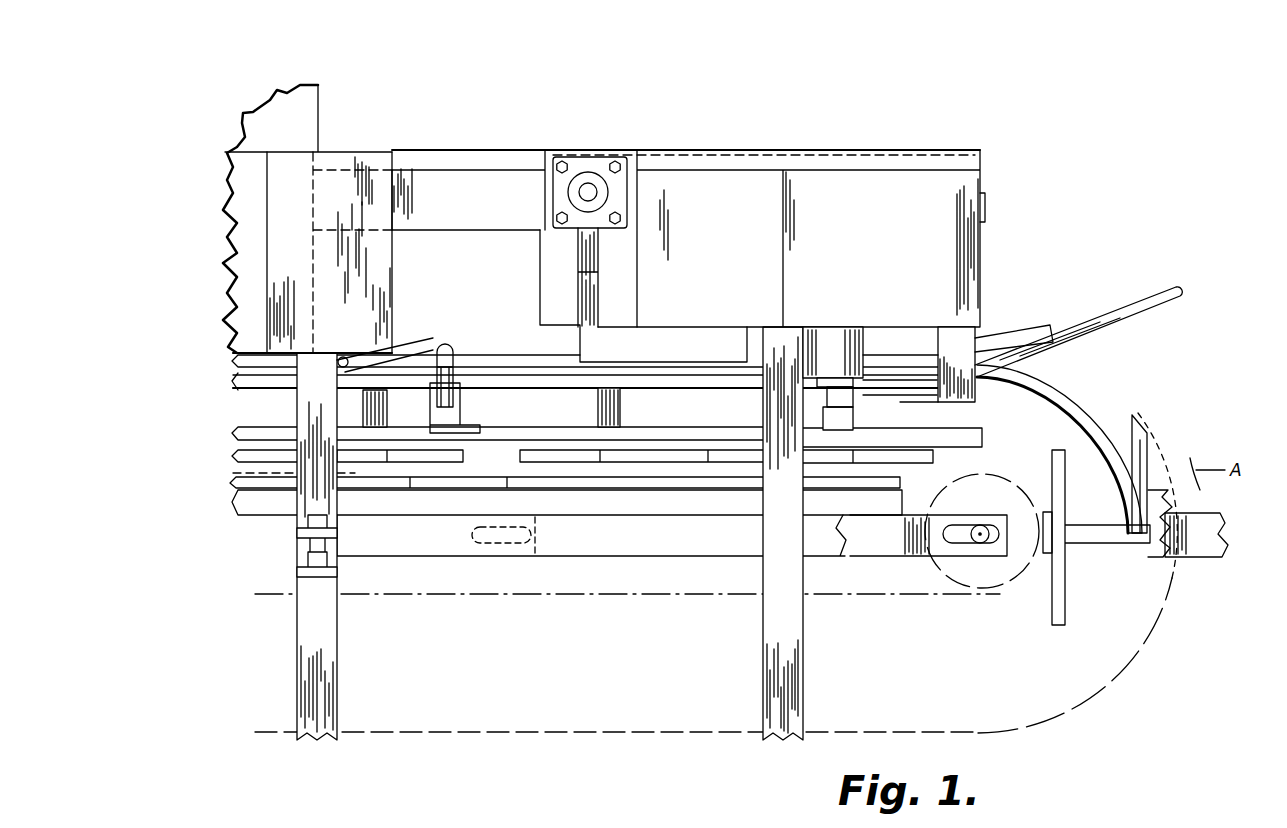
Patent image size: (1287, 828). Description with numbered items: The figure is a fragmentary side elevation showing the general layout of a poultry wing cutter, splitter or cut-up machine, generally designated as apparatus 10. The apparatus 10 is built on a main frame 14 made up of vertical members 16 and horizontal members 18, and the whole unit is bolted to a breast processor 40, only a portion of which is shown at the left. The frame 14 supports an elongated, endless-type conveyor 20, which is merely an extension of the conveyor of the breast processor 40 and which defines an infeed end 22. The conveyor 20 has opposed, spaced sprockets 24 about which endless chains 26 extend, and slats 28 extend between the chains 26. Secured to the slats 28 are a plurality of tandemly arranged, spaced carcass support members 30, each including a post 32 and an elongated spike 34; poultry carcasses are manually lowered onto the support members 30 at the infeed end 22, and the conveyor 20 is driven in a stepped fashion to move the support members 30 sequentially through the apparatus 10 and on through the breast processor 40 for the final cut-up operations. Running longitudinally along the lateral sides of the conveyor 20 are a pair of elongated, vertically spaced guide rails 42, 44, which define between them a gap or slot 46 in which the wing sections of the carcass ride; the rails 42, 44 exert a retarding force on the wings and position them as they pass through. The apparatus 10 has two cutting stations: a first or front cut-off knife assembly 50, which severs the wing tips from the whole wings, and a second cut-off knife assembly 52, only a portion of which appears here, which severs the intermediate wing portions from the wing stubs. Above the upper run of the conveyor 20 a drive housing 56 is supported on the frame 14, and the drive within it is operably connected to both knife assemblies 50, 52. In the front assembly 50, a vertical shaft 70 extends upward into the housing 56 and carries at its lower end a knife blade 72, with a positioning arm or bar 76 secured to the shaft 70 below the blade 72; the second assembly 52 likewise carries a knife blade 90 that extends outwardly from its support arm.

The wing cutter apparatus 10 is at (990, 100).
The main frame 14 is at (735, 624).
The vertical members 16 is at (338, 650).
The horizontal members 18 is at (483, 453).
The conveyor 20 is at (1196, 405).
The infeed end 22 is at (1147, 280).
The sprockets 24 is at (1007, 588).
The endless chains 26 is at (900, 594).
The slats 28 is at (1047, 515).
The carcass support members 30 is at (1140, 583).
The post 32 is at (370, 405).
The elongated spike 34 is at (1142, 458).
The breast processor 40 is at (265, 130).
The upper guide rail 42 is at (890, 360).
The lower guide rail 44 is at (730, 380).
The slot 46 is at (913, 387).
The first cut-off knife assembly 50 is at (850, 352).
The second cut-off knife assembly 52 is at (633, 184).
The drive housing 56 is at (722, 185).
The vertical shaft 70 is at (827, 392).
The knife blade 72 is at (940, 363).
The positioning arm 76 is at (920, 402).
The knife blade 90 is at (683, 340).